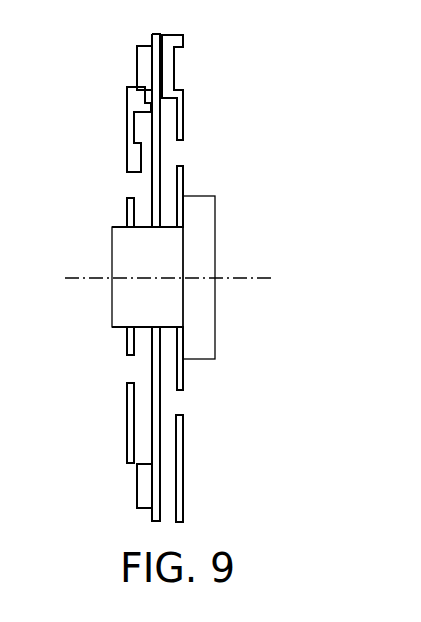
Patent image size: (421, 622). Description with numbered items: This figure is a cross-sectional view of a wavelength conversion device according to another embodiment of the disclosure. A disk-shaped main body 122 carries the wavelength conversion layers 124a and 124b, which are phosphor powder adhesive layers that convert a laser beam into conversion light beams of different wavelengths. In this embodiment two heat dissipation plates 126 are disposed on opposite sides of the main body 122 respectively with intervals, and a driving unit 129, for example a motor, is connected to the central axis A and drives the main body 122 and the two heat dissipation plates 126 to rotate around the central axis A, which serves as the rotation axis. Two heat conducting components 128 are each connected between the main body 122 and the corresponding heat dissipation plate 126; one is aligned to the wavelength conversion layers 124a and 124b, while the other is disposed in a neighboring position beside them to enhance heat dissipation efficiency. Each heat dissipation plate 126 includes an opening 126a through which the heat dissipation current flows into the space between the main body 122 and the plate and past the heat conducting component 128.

The main body 122 is at (156, 178).
The wavelength conversion layer 124a is at (143, 58).
The wavelength conversion layer 124b is at (140, 486).
The heat dissipation plate 126 is at (181, 119).
The opening 126a is at (174, 427).
The heat conducting component 128 is at (163, 67).
The driving unit 129 is at (191, 250).
The central axis A is at (256, 279).